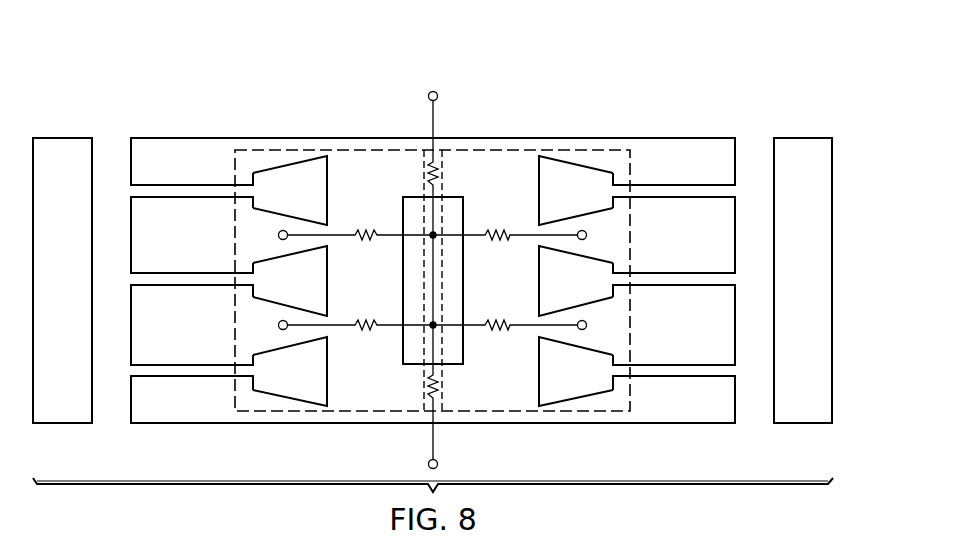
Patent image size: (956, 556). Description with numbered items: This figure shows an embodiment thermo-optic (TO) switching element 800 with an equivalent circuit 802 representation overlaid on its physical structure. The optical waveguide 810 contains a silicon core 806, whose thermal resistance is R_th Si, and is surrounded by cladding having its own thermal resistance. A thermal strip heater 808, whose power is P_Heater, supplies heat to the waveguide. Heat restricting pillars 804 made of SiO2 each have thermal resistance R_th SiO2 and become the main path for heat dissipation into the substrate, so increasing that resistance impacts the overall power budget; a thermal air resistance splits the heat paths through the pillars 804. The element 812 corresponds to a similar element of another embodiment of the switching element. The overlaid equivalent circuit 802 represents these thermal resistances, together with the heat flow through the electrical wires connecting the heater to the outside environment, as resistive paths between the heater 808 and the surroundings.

The TO switching element 800 is at (433, 254).
The equivalent circuit 802 is at (432, 121).
The heat restricting pillars 804 is at (279, 222).
The silicon core 806 is at (421, 373).
The thermal strip heater 808 is at (403, 216).
The optical waveguide 810 is at (521, 288).
The element corresponding to element 130 812 is at (202, 247).